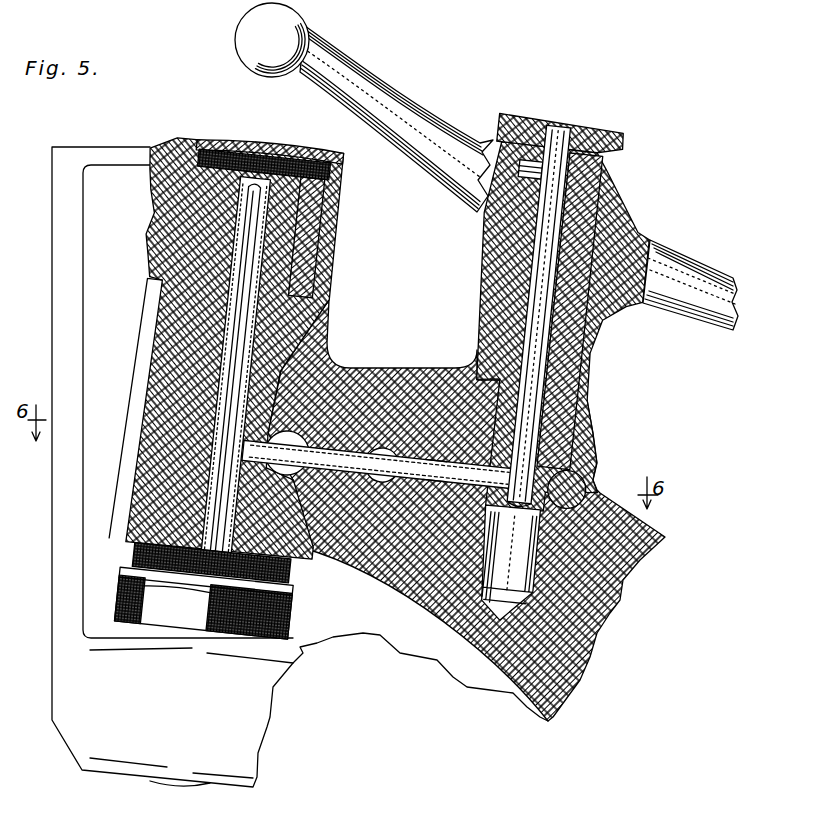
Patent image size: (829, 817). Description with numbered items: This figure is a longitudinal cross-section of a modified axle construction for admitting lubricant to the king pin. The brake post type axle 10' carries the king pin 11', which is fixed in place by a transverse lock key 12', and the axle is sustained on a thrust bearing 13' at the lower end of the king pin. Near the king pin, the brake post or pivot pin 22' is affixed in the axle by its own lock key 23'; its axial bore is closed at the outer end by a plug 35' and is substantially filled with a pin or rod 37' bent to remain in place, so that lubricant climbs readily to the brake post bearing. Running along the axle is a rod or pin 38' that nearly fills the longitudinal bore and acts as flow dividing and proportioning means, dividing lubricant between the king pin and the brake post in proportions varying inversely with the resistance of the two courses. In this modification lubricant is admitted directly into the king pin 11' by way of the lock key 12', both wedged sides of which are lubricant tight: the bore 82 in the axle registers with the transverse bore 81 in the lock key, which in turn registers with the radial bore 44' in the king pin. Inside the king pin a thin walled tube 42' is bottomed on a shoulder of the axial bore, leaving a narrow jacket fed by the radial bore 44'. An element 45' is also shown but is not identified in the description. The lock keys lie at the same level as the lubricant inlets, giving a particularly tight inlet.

The brake post type axle 10' is at (358, 467).
The king pin 11' is at (216, 344).
The lock key 12' is at (239, 544).
The thrust bearing 13' is at (201, 631).
The brake post 22' is at (553, 387).
The lock key 23' is at (598, 478).
The plug 35' is at (585, 154).
The pin or rod 37' is at (496, 312).
The rod or pin 38' is at (385, 408).
The thin walled tube 42' is at (171, 358).
The radial bore 44' is at (310, 390).
The plunger rod 45' is at (168, 360).
The transverse bore 81 is at (305, 440).
The bore 82 is at (432, 463).